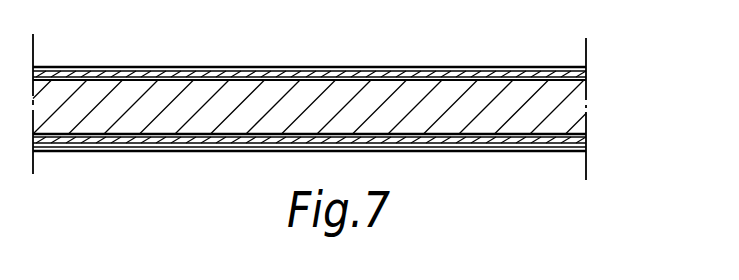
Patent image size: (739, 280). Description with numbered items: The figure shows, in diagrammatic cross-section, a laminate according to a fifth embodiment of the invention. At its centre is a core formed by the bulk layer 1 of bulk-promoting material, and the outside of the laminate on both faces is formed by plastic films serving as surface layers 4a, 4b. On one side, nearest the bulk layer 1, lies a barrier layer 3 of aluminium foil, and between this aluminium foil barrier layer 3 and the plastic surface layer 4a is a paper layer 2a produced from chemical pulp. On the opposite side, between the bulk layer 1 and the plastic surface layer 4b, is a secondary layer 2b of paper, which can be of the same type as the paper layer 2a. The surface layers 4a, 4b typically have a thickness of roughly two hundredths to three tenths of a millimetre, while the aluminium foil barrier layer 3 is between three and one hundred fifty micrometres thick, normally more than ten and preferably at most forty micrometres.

The bulk layer 1 is at (586, 98).
The paper layer 2a is at (586, 142).
The secondary layer of paper 2b is at (586, 75).
The barrier layer 3 is at (586, 136).
The surface layer 4a is at (586, 148).
The surface layer 4b is at (586, 69).